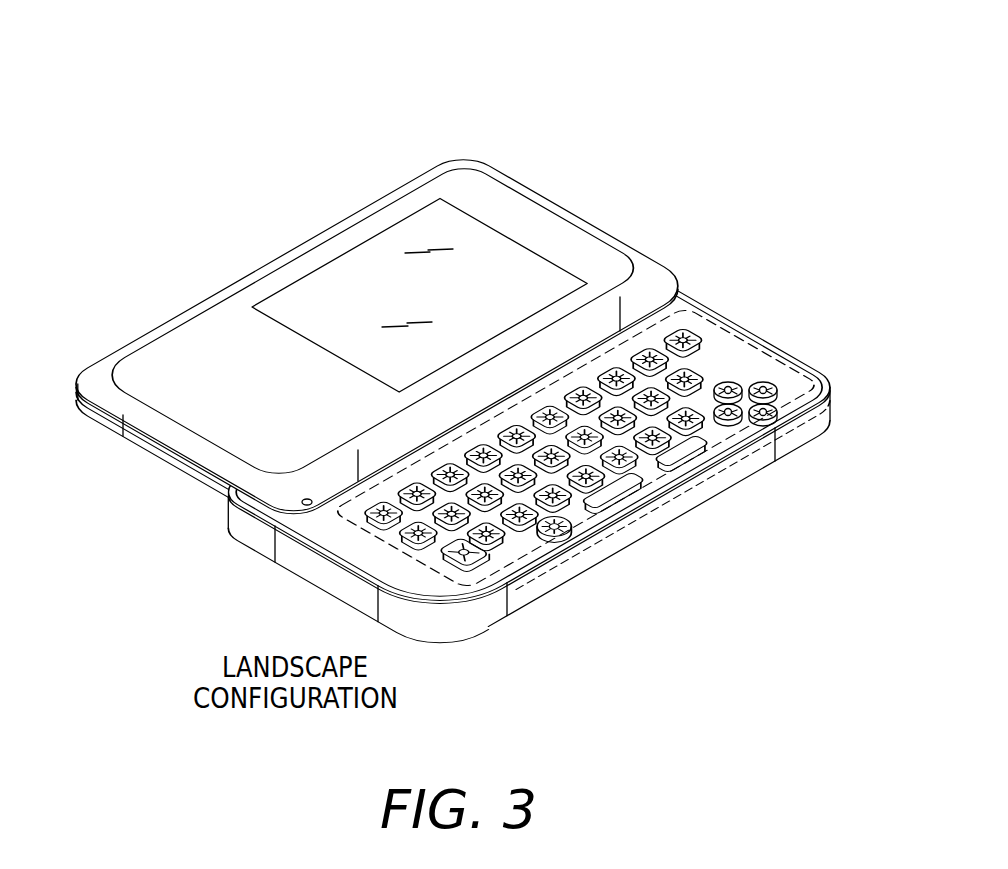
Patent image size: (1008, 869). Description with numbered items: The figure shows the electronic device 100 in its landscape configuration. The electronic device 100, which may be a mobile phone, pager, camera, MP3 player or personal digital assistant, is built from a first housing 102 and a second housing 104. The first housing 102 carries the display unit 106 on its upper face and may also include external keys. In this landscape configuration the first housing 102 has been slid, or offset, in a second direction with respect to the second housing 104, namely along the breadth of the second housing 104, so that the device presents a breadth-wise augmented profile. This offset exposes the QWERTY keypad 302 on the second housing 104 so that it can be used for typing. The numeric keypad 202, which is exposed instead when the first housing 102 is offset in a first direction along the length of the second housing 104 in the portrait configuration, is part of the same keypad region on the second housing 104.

The electronic device 100 is at (65, 46).
The first housing 102 is at (466, 161).
The second housing 104 is at (832, 408).
The display unit 106 is at (270, 296).
The numeric keypad 202 is at (518, 556).
The QWERTY keypad 302 is at (748, 344).